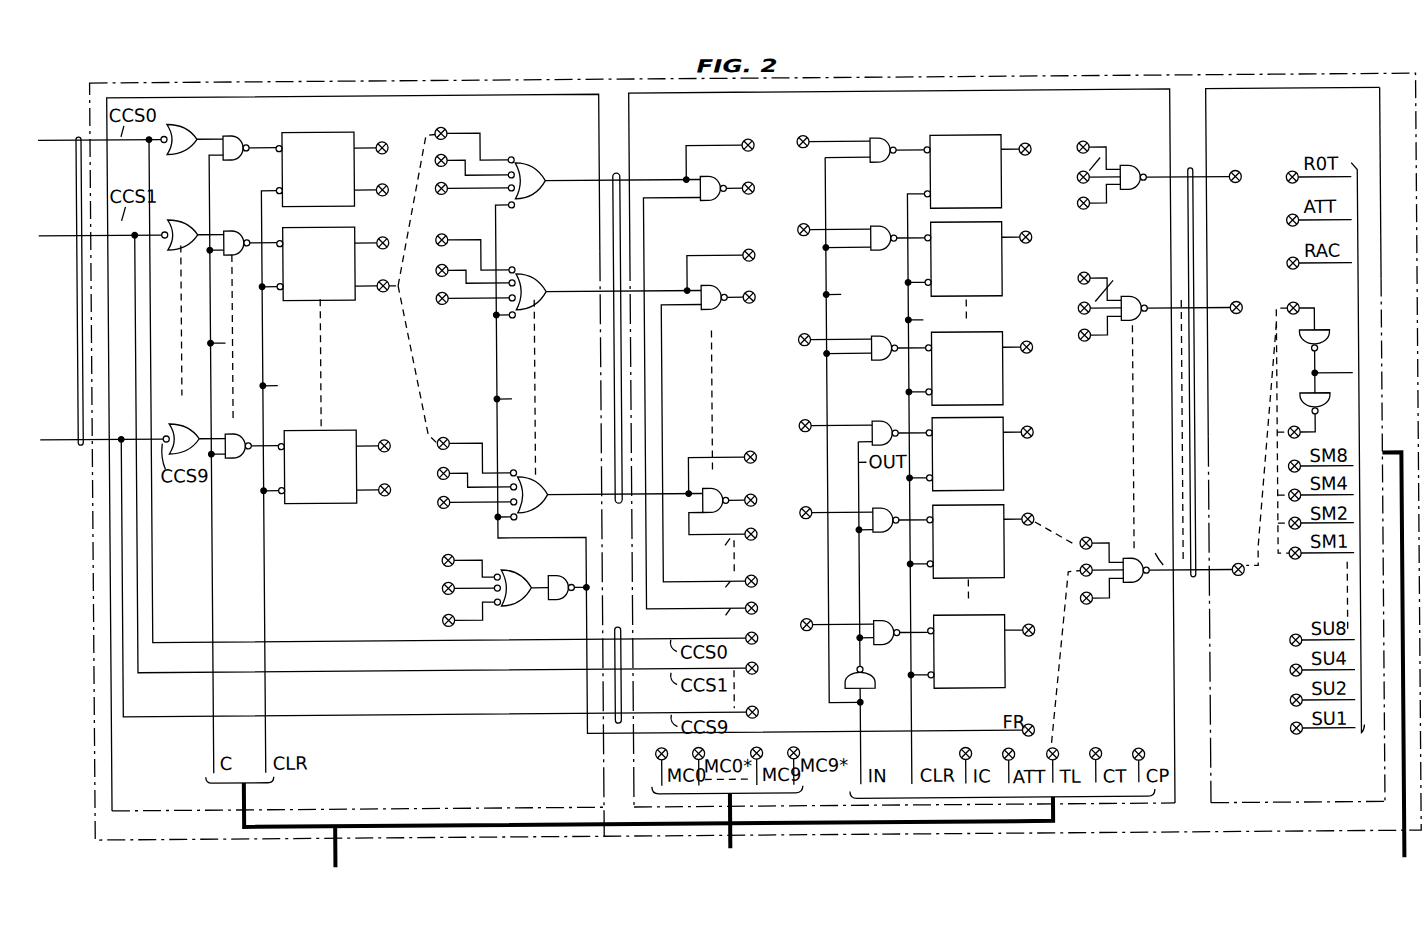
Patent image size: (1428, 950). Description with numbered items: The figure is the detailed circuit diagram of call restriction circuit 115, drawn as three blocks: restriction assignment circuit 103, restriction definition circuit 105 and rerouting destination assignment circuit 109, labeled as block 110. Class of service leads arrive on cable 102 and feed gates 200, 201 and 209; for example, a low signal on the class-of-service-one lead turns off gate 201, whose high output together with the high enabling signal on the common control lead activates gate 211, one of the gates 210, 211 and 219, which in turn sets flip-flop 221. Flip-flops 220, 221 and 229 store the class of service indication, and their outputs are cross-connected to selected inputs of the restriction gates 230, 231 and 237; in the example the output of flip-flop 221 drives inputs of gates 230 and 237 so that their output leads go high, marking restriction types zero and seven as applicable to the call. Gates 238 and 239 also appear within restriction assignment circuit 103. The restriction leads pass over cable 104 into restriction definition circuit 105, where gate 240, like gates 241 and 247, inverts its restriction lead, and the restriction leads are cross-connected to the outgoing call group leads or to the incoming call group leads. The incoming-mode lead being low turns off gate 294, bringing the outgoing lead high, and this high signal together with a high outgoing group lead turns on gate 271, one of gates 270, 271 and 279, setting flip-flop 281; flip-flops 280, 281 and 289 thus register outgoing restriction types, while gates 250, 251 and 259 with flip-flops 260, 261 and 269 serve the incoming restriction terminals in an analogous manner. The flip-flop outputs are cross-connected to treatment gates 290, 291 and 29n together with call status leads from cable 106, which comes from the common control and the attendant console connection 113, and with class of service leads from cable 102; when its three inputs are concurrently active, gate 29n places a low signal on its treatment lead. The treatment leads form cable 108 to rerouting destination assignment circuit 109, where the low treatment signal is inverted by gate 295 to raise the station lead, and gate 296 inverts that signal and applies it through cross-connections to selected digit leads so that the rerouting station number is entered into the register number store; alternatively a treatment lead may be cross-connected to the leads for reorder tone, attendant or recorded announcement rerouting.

The cable 102 is at (79, 138).
The restriction assignment circuit 103 is at (158, 812).
The restriction cable 104 is at (618, 177).
The restriction definition circuit 105 is at (1174, 803).
The cable 106 is at (237, 826).
The cable 108 is at (1192, 176).
The rerouting destination assignment circuit 109 is at (1381, 117).
The rerouting destination assignment circuit 110 is at (1398, 828).
The attendant console bus 113 is at (723, 850).
The call restriction circuit 115 is at (1254, 841).
The OR gate 200 is at (190, 132).
The gate 201 is at (181, 218).
The OR gate 209 is at (187, 431).
The gate 210 is at (240, 133).
The gate 211 is at (234, 234).
The gate 219 is at (234, 468).
The flip-flop 220 is at (313, 210).
The flip-flop 221 is at (334, 303).
The flip-flop 229 is at (333, 507).
The restriction gate 230 is at (533, 165).
The restriction gate 231 is at (536, 286).
The restriction gate 237 is at (548, 484).
The OR gate 238 is at (507, 574).
The NAND gate 239 is at (556, 576).
The gate 240 is at (707, 213).
The NAND gate 241 is at (707, 322).
The NAND gate 247 is at (720, 517).
The NAND gate 250 is at (887, 134).
The NAND gate 251 is at (877, 230).
The NAND gate 259 is at (880, 337).
The incoming restriction flip-flop 260 is at (971, 140).
The incoming restriction flip-flop 261 is at (983, 306).
The incoming restriction flip-flop 269 is at (947, 318).
The NAND gate 270 is at (876, 417).
The gate 271 is at (878, 513).
The NAND gate 279 is at (881, 646).
The outgoing restriction flip-flop 280 is at (1001, 466).
The flip-flop 281 is at (983, 582).
The outgoing restriction flip-flop 289 is at (947, 592).
The treatment gate 290 is at (1126, 203).
The treatment gate 291 is at (1126, 330).
The treatment gate 29n is at (1128, 592).
The gate 294 is at (871, 690).
The gate 295 is at (1299, 346).
The gate 296 is at (1298, 400).